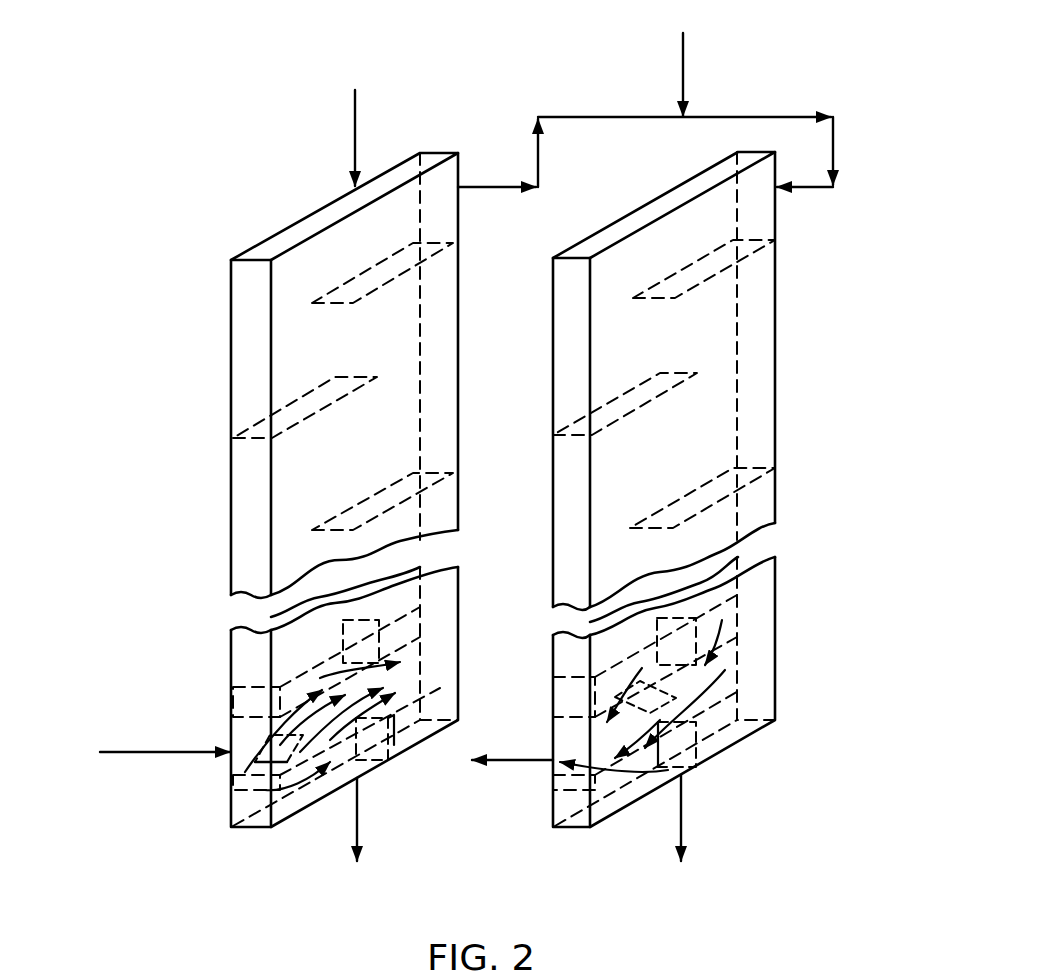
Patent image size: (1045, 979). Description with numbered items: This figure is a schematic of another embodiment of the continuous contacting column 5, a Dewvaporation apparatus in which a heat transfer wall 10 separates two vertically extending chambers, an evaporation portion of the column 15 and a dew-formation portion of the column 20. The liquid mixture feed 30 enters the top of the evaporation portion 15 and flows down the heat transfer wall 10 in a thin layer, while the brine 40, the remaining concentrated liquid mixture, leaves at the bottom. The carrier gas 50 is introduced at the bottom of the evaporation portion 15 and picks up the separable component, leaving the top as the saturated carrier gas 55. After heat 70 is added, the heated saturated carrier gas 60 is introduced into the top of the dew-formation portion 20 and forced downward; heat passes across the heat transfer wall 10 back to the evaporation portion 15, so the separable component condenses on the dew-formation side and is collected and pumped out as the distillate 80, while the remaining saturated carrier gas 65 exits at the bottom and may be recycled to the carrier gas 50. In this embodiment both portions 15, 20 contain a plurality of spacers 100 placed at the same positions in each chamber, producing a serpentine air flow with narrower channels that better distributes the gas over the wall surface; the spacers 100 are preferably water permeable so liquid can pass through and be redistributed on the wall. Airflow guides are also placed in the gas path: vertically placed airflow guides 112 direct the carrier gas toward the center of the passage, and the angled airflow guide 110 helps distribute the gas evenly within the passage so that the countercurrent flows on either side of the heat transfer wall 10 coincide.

The continuous contacting column 5 is at (214, 337).
The heat transfer wall 10 is at (550, 374).
The evaporation portion of the column 15 is at (296, 363).
The dew-formation portion of the column 20 is at (706, 339).
The liquid mixture feed 30 is at (353, 118).
The brine 40 is at (360, 818).
The carrier gas 50 is at (152, 752).
The saturated carrier gas 55 is at (500, 184).
The heated saturated carrier gas 60 is at (833, 148).
The remaining saturated carrier gas 65 is at (522, 760).
The heat 70 is at (683, 63).
The distillate 80 is at (683, 814).
The spacers 100 is at (755, 254).
The angled airflow guide 110 is at (245, 762).
The vertical airflow guides 112 is at (372, 638).